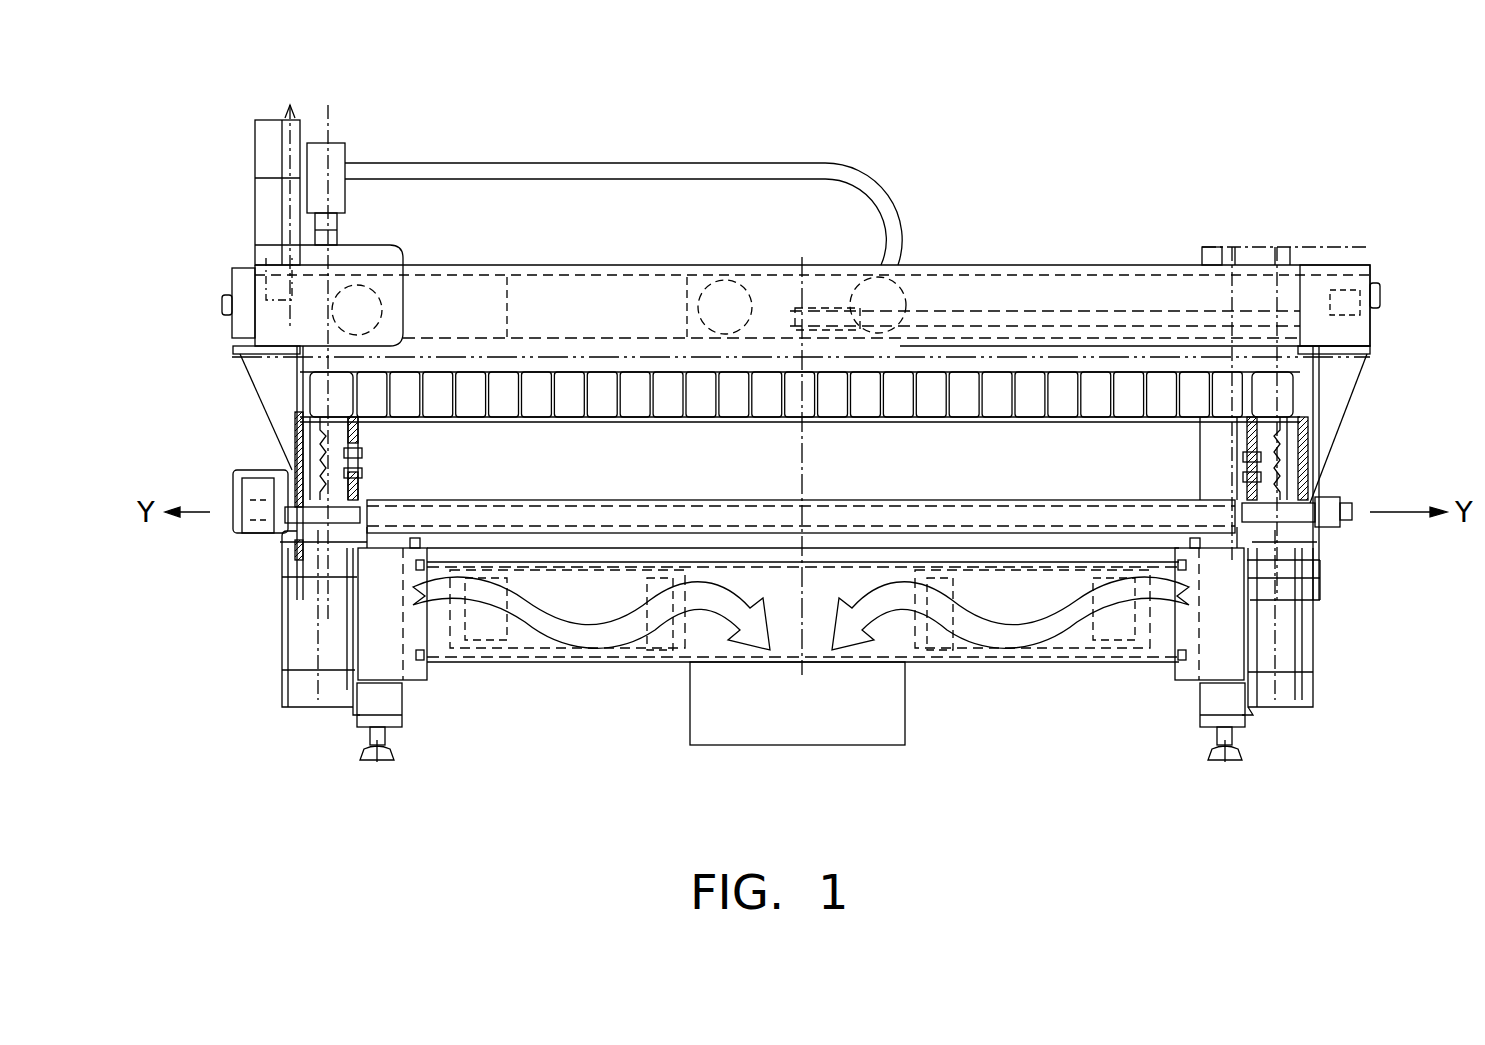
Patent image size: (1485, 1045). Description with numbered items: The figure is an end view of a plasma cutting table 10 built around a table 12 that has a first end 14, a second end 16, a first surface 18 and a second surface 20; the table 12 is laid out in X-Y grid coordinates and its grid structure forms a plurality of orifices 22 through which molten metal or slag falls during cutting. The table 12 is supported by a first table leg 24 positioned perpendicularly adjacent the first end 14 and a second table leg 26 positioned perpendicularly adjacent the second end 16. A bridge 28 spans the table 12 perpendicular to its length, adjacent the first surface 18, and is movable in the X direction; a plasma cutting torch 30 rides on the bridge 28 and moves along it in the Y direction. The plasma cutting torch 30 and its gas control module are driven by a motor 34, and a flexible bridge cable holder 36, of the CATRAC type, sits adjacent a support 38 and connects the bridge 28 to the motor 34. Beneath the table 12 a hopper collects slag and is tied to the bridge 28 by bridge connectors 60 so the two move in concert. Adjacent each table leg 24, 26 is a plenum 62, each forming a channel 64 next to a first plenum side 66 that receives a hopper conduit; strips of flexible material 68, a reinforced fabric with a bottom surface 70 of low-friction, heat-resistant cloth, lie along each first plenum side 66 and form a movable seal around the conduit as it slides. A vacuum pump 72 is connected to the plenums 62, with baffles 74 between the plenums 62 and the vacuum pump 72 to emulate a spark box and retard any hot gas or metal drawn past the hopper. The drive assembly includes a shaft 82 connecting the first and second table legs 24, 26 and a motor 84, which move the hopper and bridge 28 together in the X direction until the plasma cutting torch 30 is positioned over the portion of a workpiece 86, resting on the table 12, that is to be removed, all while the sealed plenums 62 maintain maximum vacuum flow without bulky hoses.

The plasma cutting table 10 is at (970, 757).
The table 12 is at (1100, 368).
The first end 14 is at (295, 400).
The second end 16 is at (1300, 400).
The first surface 18 is at (1355, 292).
The second surface 20 is at (855, 422).
The orifices 22 is at (1035, 380).
The first table leg 24 is at (353, 718).
The second table leg 26 is at (1253, 718).
The bridge 28 is at (925, 285).
The plasma cutting torch 30 is at (275, 273).
The motor 34 is at (333, 157).
The flexible bridge cable holder 36 is at (593, 165).
The support 38 is at (1005, 313).
The bridge connectors 60 is at (238, 358).
The plenum 62 is at (425, 682).
The channel 64 is at (397, 641).
The first plenum side 66 is at (430, 545).
The flexible material 68 is at (403, 550).
The bottom surface 70 is at (1240, 640).
The vacuum pump 72 is at (730, 730).
The baffles 74 is at (488, 640).
The shaft 82 is at (740, 515).
The motor 84 is at (235, 485).
The workpiece 86 is at (578, 357).